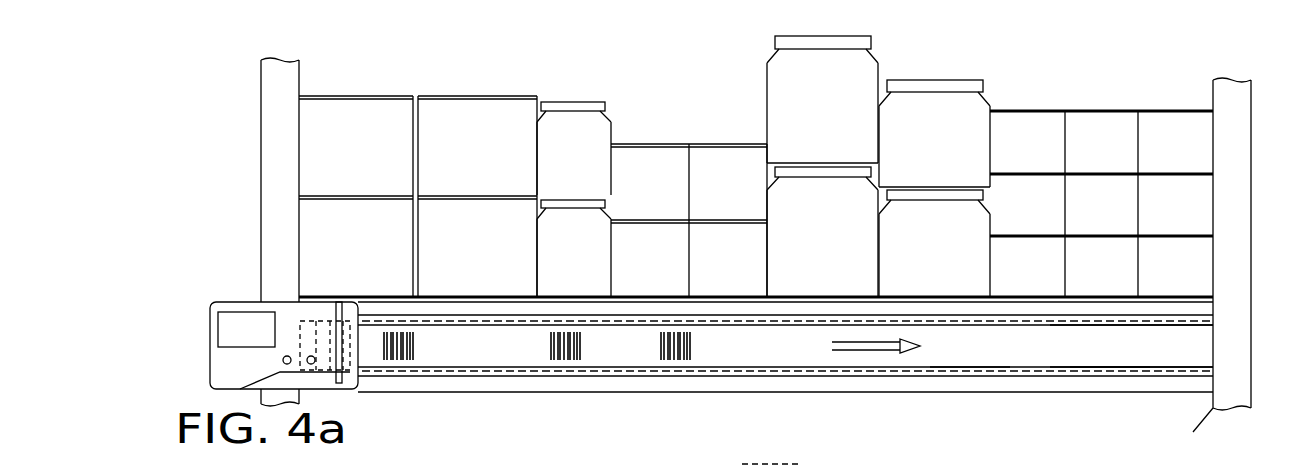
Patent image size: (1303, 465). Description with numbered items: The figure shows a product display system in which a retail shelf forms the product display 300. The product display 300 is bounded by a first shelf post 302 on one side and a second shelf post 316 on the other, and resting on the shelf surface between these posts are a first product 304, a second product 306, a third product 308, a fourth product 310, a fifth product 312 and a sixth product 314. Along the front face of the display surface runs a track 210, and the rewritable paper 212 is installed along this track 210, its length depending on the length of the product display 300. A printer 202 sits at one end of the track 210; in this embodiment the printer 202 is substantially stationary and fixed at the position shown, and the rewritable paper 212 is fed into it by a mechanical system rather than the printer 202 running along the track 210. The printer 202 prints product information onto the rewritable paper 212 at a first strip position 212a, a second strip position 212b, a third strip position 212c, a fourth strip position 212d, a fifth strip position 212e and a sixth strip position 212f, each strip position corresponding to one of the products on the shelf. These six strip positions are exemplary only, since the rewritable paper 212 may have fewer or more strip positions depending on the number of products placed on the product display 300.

The printer 202 is at (256, 302).
The track 210 is at (1133, 323).
The rewritable paper 212 is at (1185, 334).
The first strip position 212a is at (430, 353).
The second strip position 212b is at (588, 354).
The third strip position 212c is at (705, 354).
The fourth strip position 212d is at (832, 355).
The fifth strip position 212e is at (950, 356).
The sixth strip position 212f is at (1100, 355).
The product display 300 is at (1140, 58).
The first shelf post 302 is at (287, 58).
The first product 304 is at (368, 96).
The second product 306 is at (565, 102).
The third product 308 is at (641, 144).
The fourth product 310 is at (878, 60).
The fifth product 312 is at (968, 80).
The sixth product 314 is at (1048, 110).
The second shelf post 316 is at (1228, 80).